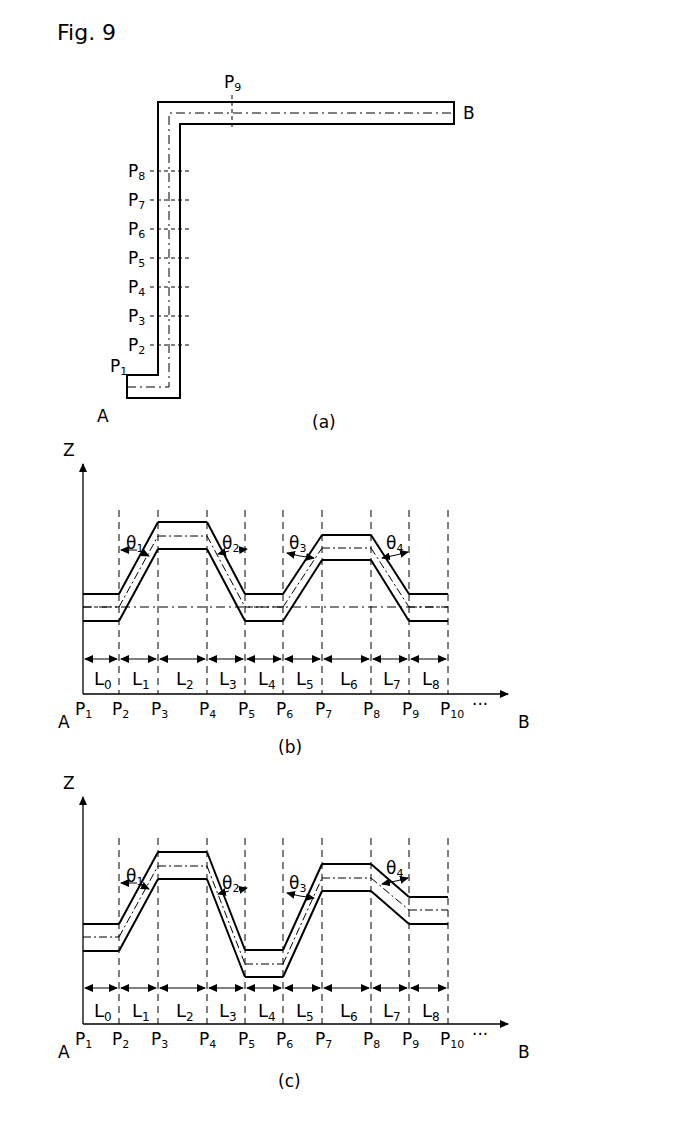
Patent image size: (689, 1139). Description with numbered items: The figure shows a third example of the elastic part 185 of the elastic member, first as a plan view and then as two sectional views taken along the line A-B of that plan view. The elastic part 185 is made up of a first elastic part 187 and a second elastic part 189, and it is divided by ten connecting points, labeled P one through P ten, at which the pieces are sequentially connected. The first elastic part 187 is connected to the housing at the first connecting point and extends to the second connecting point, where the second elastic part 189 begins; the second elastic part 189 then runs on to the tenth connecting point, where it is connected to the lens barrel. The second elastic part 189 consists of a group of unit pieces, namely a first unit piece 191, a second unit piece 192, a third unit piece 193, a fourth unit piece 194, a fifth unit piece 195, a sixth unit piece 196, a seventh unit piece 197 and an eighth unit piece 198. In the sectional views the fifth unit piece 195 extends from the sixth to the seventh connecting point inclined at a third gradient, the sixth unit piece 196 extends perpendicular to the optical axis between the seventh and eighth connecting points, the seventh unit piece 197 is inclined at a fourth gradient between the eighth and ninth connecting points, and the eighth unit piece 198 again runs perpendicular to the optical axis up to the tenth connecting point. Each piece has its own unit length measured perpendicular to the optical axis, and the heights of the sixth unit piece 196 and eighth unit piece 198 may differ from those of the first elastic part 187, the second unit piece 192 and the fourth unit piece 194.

The elastic part 185 is at (478, 92).
The first elastic part 187 is at (182, 377).
The second elastic part 189 is at (309, 255).
The first unit piece 191 is at (182, 334).
The second unit piece 192 is at (182, 307).
The third unit piece 193 is at (182, 278).
The fourth unit piece 194 is at (182, 247).
The fifth unit piece 195 is at (182, 217).
The sixth unit piece 196 is at (182, 187).
The seventh unit piece 197 is at (212, 119).
The eighth unit piece 198 is at (362, 117).